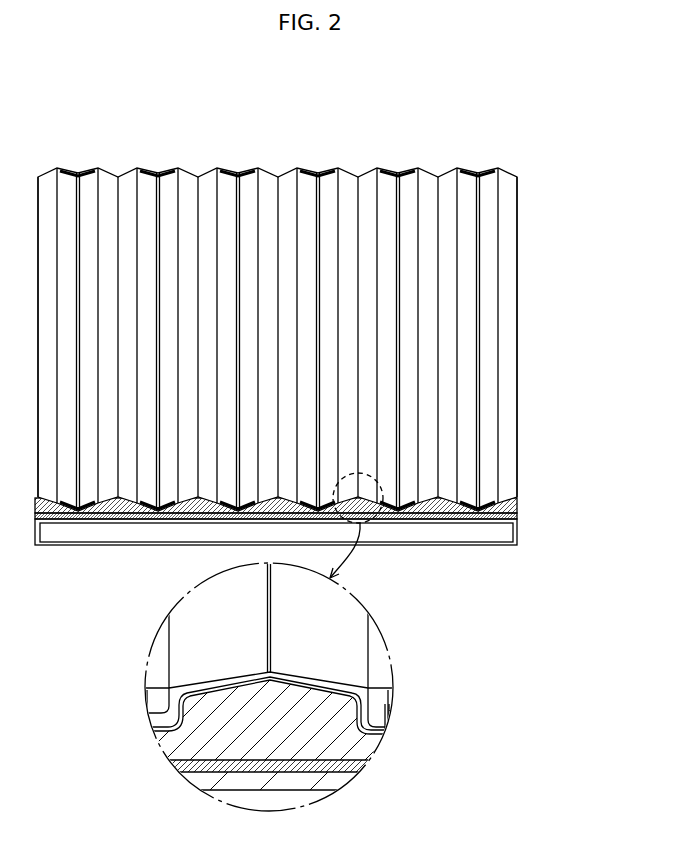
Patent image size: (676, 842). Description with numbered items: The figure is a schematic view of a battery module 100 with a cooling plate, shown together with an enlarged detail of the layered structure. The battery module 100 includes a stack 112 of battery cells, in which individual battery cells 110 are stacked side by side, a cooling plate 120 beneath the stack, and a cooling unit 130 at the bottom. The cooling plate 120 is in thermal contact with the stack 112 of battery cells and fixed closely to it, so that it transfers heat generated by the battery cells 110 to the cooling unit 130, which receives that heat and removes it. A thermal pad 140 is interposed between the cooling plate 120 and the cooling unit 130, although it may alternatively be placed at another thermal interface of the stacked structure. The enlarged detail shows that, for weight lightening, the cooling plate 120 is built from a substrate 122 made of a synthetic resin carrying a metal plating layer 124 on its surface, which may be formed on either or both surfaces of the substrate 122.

The battery module 100 is at (441, 124).
The battery cell 110 is at (517, 240).
The stack of battery cells 112 is at (517, 167).
The cooling plate 120 is at (519, 507).
The substrate 122 is at (358, 747).
The metal plating layer 124 is at (381, 689).
The cooling unit 130 is at (473, 546).
The thermal pad 140 is at (517, 517).